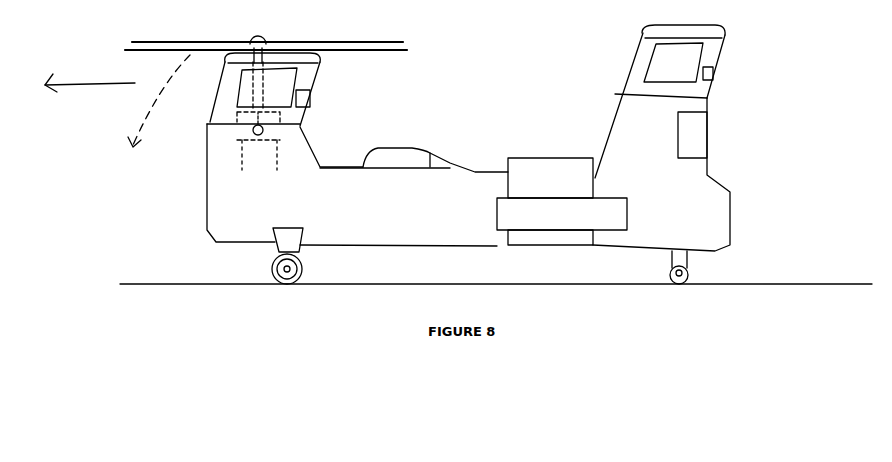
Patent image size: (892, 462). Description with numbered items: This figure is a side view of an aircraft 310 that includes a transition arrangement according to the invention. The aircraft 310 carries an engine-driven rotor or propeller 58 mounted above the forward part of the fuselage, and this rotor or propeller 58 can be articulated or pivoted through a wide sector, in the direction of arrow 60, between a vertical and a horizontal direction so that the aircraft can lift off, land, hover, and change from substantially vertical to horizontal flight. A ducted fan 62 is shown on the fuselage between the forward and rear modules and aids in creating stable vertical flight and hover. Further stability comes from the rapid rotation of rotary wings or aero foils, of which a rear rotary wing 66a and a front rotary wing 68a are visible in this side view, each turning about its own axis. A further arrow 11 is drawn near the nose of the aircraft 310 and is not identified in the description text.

The aircraft 310 is at (185, 331).
The engine-driven rotor or propeller 58 is at (410, 47).
The rotary wing or aero foil 68a is at (284, 80).
The rotary wing or aero foil 66a is at (685, 62).
The ducted fan 62 is at (562, 191).
The arrow 60 is at (146, 114).
The forward direction arrow 11 is at (90, 77).